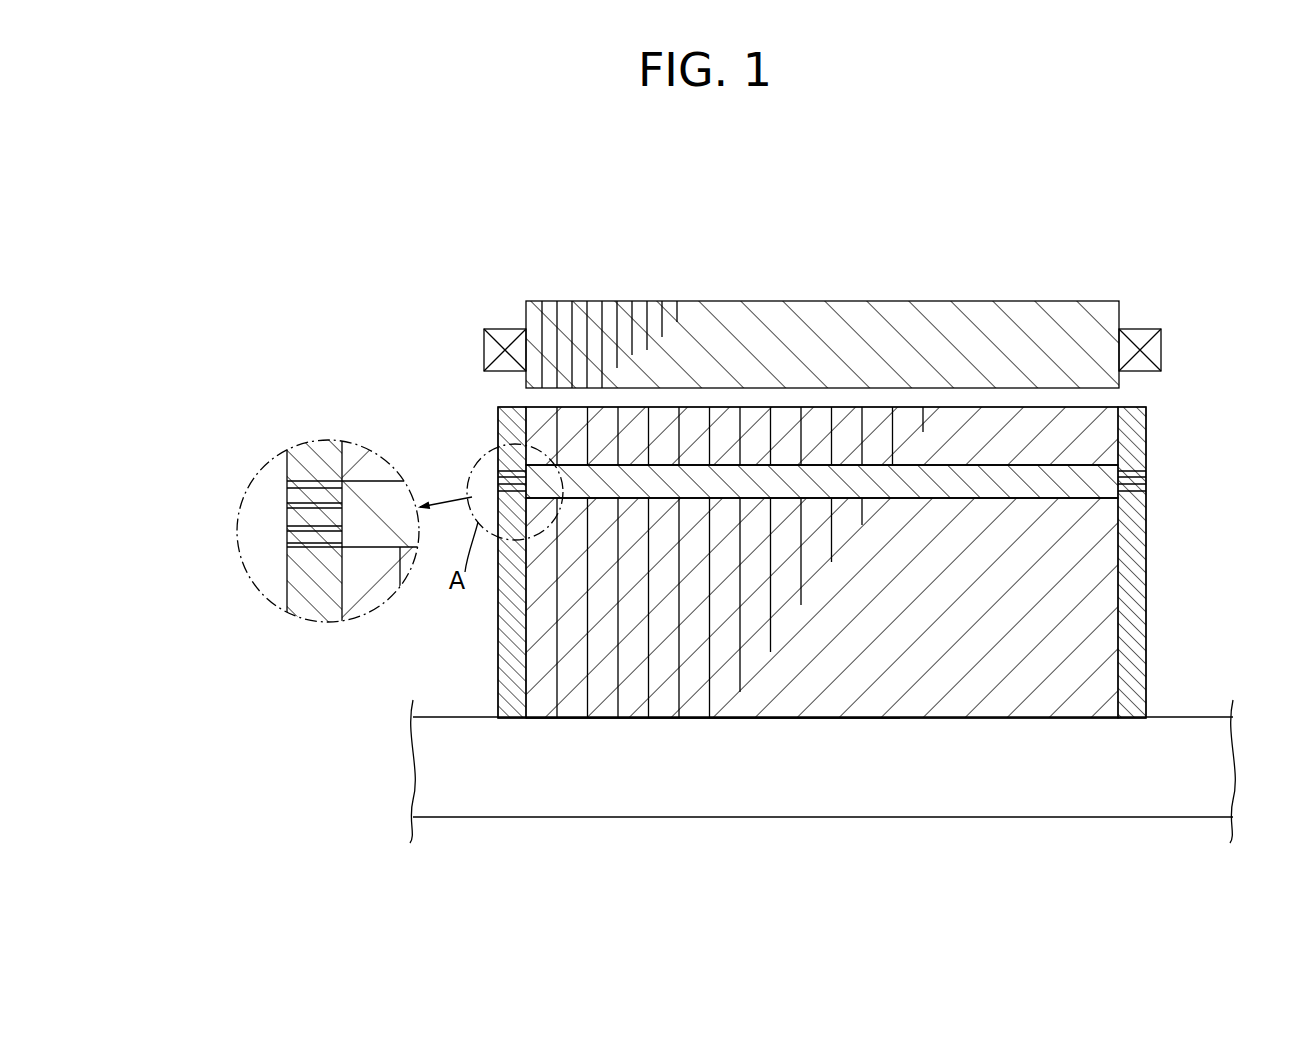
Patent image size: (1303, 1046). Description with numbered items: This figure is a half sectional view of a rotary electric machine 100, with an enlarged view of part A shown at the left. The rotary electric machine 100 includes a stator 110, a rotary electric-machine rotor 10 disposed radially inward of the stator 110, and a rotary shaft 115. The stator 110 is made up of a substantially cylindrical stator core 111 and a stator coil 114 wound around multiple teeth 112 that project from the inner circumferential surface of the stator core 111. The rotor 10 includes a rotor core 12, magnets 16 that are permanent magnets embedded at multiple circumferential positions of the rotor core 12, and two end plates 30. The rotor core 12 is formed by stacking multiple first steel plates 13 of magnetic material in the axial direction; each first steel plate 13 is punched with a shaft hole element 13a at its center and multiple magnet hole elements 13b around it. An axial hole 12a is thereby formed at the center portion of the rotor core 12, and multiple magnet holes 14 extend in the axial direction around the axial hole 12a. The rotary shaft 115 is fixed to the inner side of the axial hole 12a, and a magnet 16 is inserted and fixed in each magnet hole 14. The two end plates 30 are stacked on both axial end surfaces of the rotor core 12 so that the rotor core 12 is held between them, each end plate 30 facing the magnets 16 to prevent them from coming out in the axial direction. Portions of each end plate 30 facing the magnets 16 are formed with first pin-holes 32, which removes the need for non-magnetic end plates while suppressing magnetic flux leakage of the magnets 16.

The rotary electric machine 100 is at (1110, 248).
The stator 110 is at (1018, 301).
The stator core 111 is at (838, 301).
The teeth 112 is at (525, 384).
The stator coil 114 is at (1138, 327).
The rotary shaft 115 is at (968, 773).
The rotary electric-machine rotor 10 is at (1148, 440).
The rotor core 12 is at (1112, 548).
The axial hole 12a is at (778, 717).
The first steel plates 13 is at (600, 407).
The shaft hole element 13a is at (598, 717).
The magnet hole elements 13b is at (670, 480).
The magnet holes 14 is at (1005, 495).
The magnets 16 is at (962, 485).
The end plates 30 is at (1148, 612).
The first pin-holes 32 is at (313, 480).